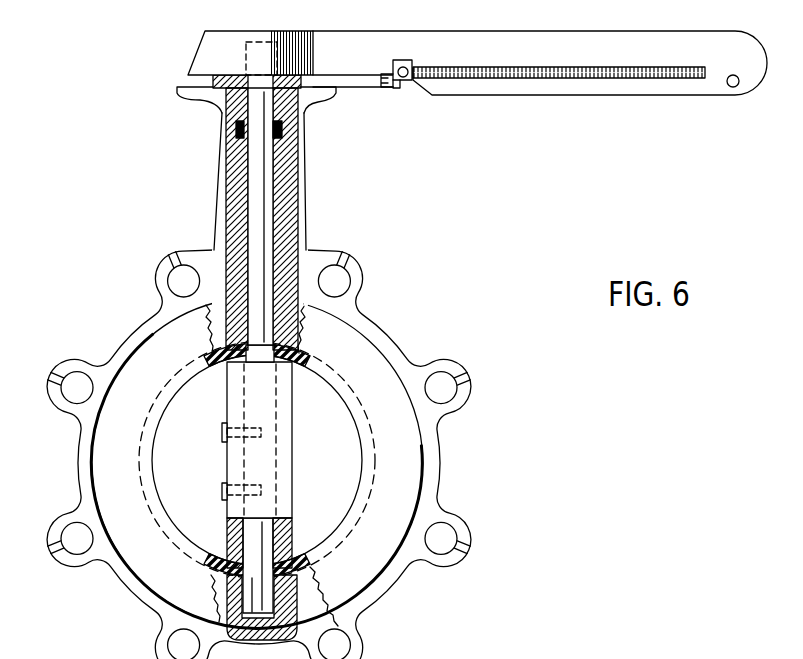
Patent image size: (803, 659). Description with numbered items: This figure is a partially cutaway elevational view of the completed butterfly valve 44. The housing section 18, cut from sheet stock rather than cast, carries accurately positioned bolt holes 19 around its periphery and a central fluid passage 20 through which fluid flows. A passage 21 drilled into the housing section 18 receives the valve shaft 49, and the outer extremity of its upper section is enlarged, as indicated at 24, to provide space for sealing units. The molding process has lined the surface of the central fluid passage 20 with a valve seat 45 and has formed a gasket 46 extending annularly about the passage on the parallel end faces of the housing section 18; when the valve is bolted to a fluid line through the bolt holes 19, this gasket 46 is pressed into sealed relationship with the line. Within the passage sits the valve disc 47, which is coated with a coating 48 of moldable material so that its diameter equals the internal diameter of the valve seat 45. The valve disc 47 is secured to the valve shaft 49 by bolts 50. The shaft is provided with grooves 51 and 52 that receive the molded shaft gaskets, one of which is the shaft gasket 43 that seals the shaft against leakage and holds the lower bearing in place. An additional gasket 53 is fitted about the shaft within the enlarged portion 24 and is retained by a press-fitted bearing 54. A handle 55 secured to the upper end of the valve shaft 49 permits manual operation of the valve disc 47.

The housing section 18 is at (445, 446).
The bolt holes 19 is at (442, 372).
The central fluid passage 20 is at (282, 331).
The passage 21 is at (290, 215).
The enlarged portion of the upper section 24 is at (303, 110).
The shaft gasket 43 is at (248, 370).
The butterfly valve 44 is at (405, 333).
The valve seat 45 is at (257, 460).
The gasket 46 is at (368, 578).
The valve disc 47 is at (232, 530).
The coating 48 is at (280, 428).
The valve shaft 49 is at (260, 185).
The bolts 50 is at (222, 438).
The groove 51 is at (268, 584).
The groove 52 is at (250, 347).
The gasket 53 is at (240, 135).
The press-fitted bearing 54 is at (233, 110).
The handle 55 is at (548, 60).